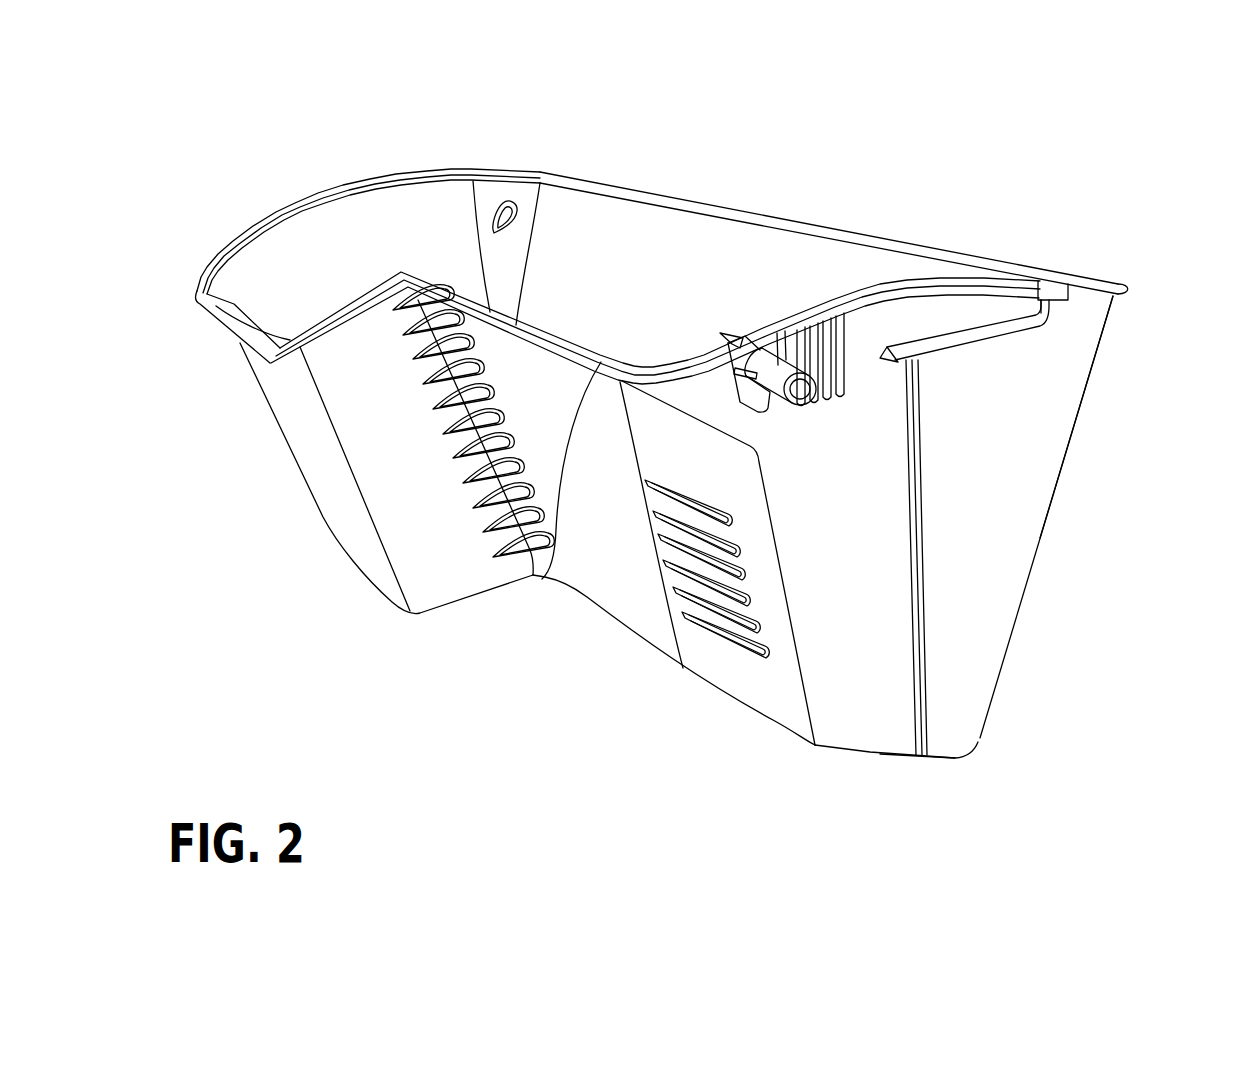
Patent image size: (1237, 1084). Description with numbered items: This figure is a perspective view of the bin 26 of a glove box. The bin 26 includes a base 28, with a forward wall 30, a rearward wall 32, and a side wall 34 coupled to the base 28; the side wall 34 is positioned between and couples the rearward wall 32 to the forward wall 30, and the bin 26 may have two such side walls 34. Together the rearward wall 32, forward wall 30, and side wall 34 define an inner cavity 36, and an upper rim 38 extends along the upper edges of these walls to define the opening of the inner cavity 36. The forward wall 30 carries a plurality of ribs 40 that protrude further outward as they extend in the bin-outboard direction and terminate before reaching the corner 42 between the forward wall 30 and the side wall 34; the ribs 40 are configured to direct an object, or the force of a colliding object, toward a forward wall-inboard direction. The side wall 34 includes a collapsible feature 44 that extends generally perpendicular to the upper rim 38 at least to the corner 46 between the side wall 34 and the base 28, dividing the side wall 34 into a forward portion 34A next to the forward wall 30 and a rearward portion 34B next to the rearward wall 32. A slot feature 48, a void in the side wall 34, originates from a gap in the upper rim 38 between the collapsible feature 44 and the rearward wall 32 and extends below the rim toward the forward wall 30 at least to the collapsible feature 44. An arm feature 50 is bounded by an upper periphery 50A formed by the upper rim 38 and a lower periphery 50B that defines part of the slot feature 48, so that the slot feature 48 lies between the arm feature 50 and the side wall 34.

The bin 26 is at (762, 208).
The base 28 is at (908, 766).
The forward wall 30 is at (620, 497).
The rearward wall 32 is at (668, 300).
The side wall 34 is at (400, 215).
The forward portion 34A is at (831, 492).
The rearward portion 34B is at (970, 600).
The inner cavity 36 is at (604, 262).
The upper rim 38 is at (560, 566).
The ribs 40 is at (703, 542).
The corner 42 is at (765, 606).
The collapsible feature 44 is at (908, 480).
The corner 46 is at (873, 756).
The slot feature 48 is at (930, 337).
The arm feature 50 is at (917, 325).
The upper periphery 50A is at (995, 280).
The lower periphery 50B is at (960, 323).